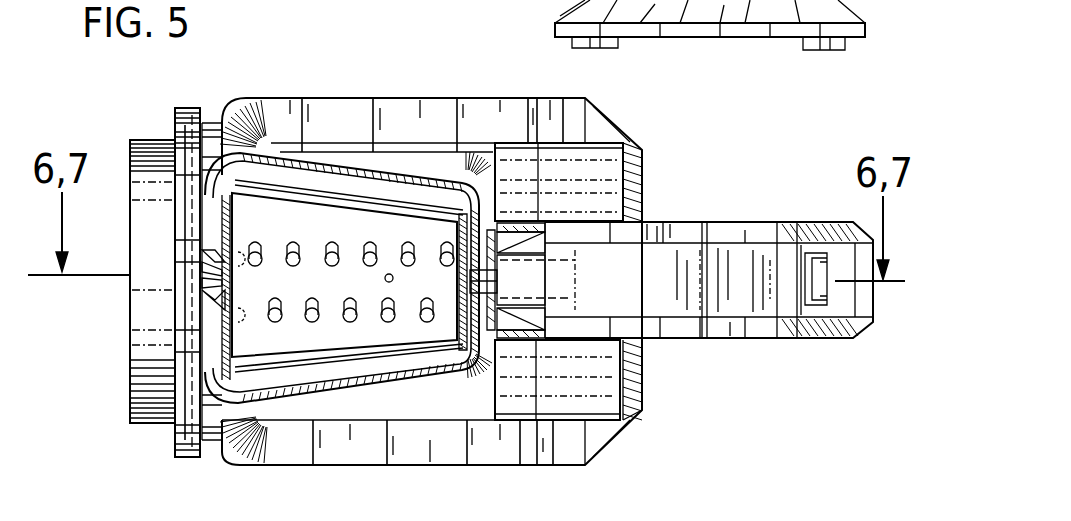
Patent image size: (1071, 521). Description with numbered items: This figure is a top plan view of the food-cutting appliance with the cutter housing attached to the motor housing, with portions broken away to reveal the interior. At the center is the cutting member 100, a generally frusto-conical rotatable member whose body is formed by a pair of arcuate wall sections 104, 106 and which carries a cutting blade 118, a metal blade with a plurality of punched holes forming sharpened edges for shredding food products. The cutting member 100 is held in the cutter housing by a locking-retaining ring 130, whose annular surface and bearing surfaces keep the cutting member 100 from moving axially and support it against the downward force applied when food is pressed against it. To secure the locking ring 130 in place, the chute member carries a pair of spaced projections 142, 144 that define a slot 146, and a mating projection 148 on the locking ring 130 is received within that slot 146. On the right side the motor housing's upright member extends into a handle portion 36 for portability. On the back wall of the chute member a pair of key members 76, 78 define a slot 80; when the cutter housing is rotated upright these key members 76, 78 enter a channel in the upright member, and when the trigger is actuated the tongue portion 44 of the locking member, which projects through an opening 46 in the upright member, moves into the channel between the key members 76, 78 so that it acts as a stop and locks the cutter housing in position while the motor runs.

The handle portion 36 is at (795, 342).
The tongue portion 44 is at (533, 288).
The opening 46 is at (540, 278).
The key member 76 is at (478, 328).
The key member 78 is at (620, 180).
The slot 80 is at (466, 245).
The cutting member 100 is at (336, 196).
The arcuate wall section 104 is at (260, 183).
The arcuate wall section 106 is at (290, 367).
The cutting blade 118 is at (295, 230).
The locking-retaining ring 130 is at (140, 128).
The projection 142 is at (206, 262).
The projection 144 is at (214, 292).
The slot 146 is at (210, 272).
The mating projection 148 is at (207, 283).